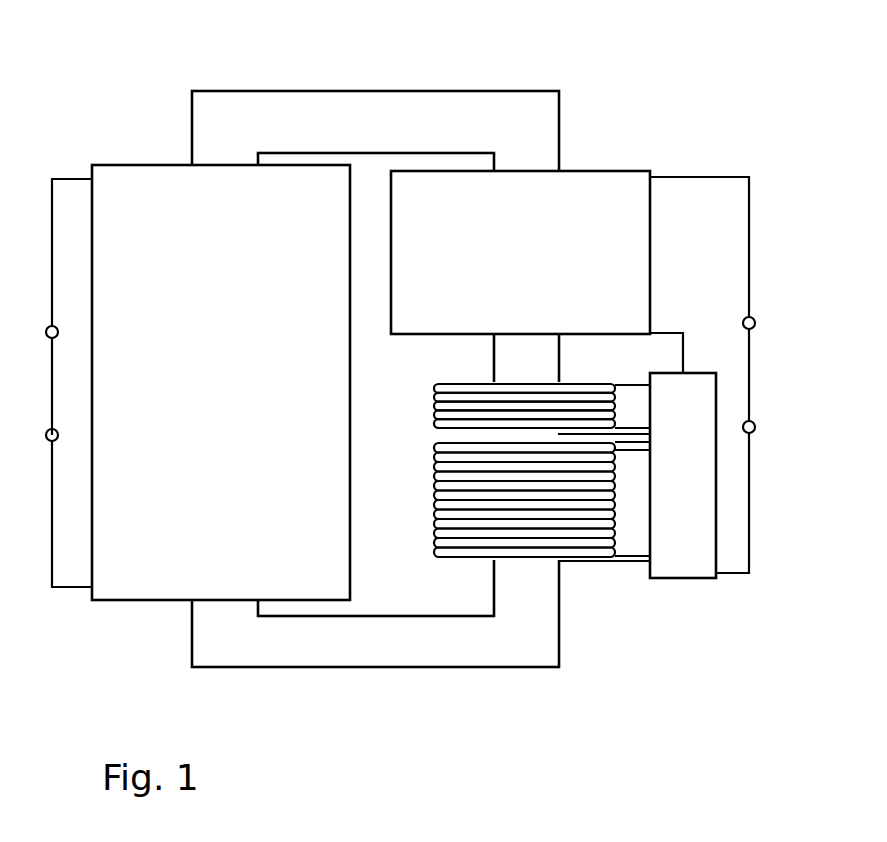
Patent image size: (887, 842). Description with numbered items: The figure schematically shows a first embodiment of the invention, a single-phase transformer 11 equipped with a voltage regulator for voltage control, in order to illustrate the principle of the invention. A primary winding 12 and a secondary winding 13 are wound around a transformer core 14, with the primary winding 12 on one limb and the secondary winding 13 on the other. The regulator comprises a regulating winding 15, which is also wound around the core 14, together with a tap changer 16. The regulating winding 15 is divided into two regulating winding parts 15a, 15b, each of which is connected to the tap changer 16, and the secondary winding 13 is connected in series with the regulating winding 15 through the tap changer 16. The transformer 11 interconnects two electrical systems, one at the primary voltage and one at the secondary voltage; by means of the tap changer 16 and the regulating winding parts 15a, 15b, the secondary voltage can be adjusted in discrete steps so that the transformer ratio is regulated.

The single-phase transformer 11 is at (420, 377).
The primary winding 12 is at (131, 165).
The secondary winding 13 is at (606, 170).
The transformer core 14 is at (326, 110).
The regulating winding 15 is at (460, 562).
The regulating winding part 15a is at (434, 413).
The regulating winding part 15b is at (434, 494).
The tap changer 16 is at (679, 578).